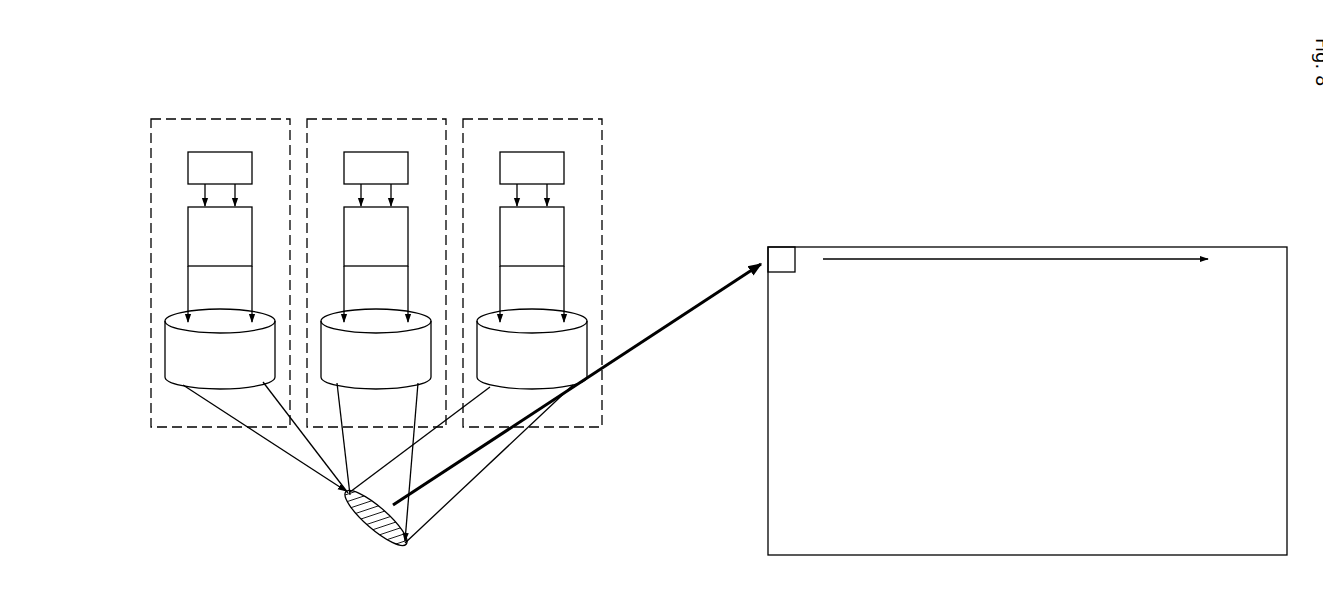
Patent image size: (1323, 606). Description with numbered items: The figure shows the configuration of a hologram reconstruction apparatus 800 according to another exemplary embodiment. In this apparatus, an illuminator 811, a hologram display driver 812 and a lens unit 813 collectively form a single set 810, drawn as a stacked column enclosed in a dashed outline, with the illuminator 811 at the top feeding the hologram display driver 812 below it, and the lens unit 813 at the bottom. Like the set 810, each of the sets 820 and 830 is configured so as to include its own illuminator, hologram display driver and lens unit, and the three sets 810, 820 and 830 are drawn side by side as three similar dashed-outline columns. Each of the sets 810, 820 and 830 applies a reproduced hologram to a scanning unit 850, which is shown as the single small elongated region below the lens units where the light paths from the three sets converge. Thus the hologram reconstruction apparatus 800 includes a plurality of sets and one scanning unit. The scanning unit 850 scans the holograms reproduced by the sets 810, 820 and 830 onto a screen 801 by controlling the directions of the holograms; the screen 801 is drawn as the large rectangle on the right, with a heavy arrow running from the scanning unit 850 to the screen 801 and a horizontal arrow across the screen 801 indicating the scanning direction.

The hologram reconstruction apparatus 800 is at (434, 112).
The screen 801 is at (930, 247).
The set 810 is at (222, 117).
The set 820 is at (378, 117).
The set 830 is at (534, 117).
The illuminator 811 is at (188, 165).
The hologram display driver 812 is at (188, 236).
The lens unit 813 is at (166, 345).
The scanning unit 850 is at (365, 531).